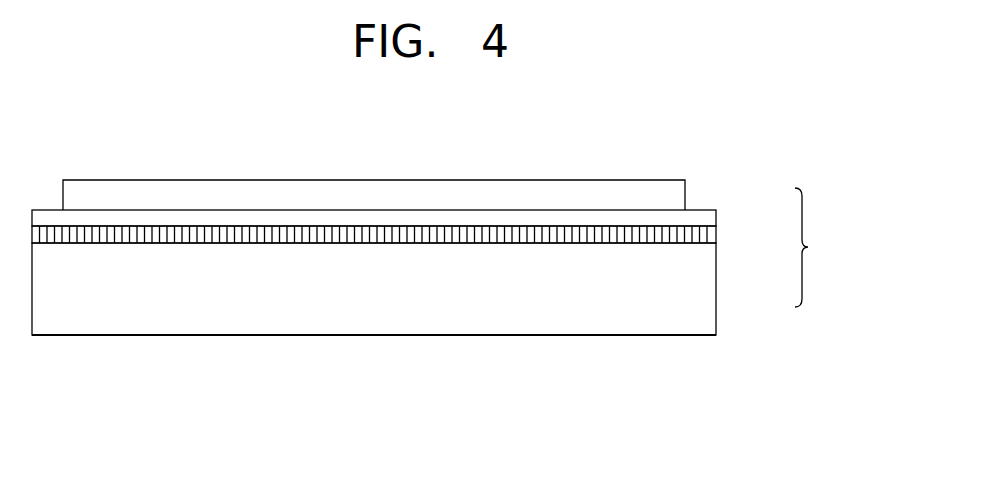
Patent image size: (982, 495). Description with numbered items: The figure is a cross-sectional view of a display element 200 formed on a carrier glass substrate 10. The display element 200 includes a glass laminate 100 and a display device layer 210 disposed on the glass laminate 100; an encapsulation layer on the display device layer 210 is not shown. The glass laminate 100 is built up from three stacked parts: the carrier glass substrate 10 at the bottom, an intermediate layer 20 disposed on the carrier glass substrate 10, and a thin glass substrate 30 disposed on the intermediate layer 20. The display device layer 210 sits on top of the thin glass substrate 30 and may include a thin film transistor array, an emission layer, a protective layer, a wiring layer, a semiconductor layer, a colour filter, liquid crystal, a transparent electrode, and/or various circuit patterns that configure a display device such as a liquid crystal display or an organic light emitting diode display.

The carrier glass substrate 10 is at (705, 312).
The intermediate layer 20 is at (716, 235).
The thin glass substrate 30 is at (710, 220).
The glass laminate 100 is at (441, 256).
The display element 200 is at (433, 150).
The display device layer 210 is at (675, 188).